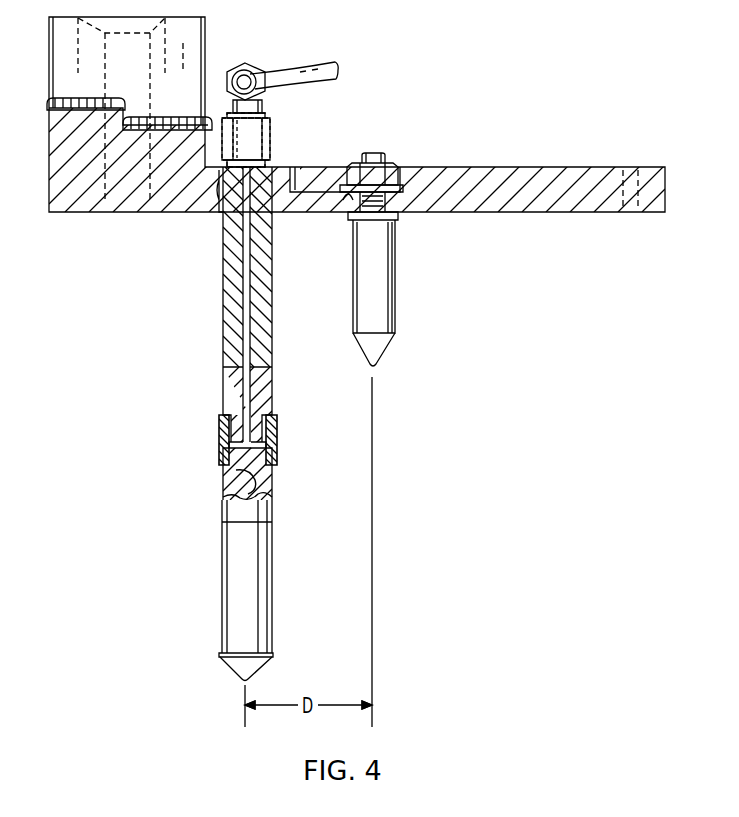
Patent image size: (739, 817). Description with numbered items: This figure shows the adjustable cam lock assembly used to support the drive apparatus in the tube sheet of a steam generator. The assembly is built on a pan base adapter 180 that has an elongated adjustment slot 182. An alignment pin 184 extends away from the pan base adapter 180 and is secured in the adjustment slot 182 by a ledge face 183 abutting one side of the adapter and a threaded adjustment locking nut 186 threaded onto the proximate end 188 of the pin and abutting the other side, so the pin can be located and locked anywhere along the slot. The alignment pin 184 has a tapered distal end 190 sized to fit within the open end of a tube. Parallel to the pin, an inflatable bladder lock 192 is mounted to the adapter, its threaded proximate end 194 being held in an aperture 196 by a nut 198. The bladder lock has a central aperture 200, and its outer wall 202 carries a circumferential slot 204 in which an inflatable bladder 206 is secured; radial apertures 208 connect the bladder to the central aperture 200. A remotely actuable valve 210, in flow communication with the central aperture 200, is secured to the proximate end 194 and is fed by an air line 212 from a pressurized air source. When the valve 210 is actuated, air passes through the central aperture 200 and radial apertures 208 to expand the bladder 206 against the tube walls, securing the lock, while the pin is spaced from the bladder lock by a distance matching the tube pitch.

The pan base adapter 180 is at (573, 175).
The adjustment slot 182 is at (303, 167).
The ledge face 183 is at (346, 200).
The alignment pin 184 is at (392, 293).
The threaded adjustment locking nut 186 is at (392, 168).
The proximate end 188 is at (377, 153).
The tapered distal end 190 is at (388, 355).
The inflatable bladder lock 192 is at (258, 672).
The threaded proximate end 194 is at (263, 100).
The aperture 196 is at (220, 212).
The nut 198 is at (270, 127).
The central aperture 200 is at (250, 306).
The outer wall 202 is at (275, 490).
The circumferential slot 204 is at (265, 405).
The inflatable bladder 206 is at (278, 450).
The radial apertures 208 is at (248, 485).
The remotely actuable valve 210 is at (253, 45).
The air line 212 is at (333, 58).